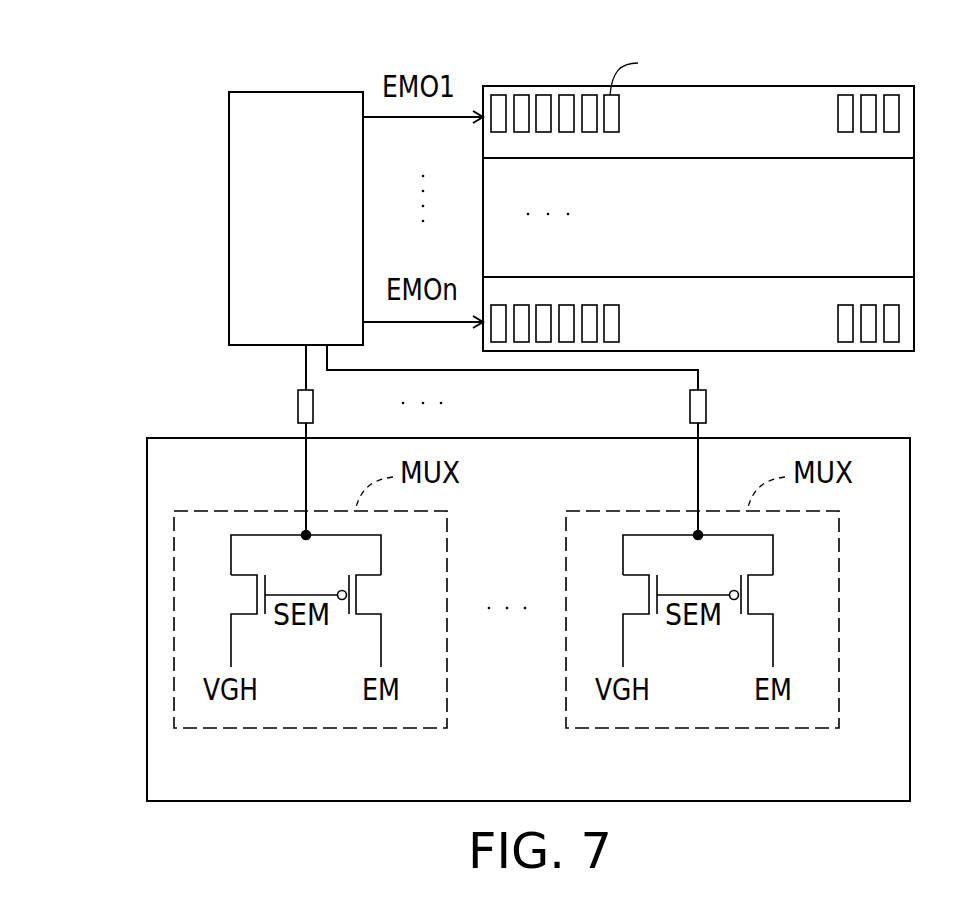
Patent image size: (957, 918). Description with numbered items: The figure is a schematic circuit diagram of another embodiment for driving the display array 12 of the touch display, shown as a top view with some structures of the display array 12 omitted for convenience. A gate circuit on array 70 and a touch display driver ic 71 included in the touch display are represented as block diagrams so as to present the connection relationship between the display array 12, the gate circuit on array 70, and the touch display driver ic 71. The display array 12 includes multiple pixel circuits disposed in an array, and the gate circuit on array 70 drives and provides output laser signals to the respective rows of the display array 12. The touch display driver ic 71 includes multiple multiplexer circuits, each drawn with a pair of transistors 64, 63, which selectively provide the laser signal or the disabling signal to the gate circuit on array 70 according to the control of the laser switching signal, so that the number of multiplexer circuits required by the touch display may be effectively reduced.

The gate circuit on array 70 is at (296, 91).
The display array 12 is at (848, 85).
The touch display driver ic 71 is at (207, 438).
The first transistor 64 is at (427, 621).
The second transistor 63 is at (573, 621).